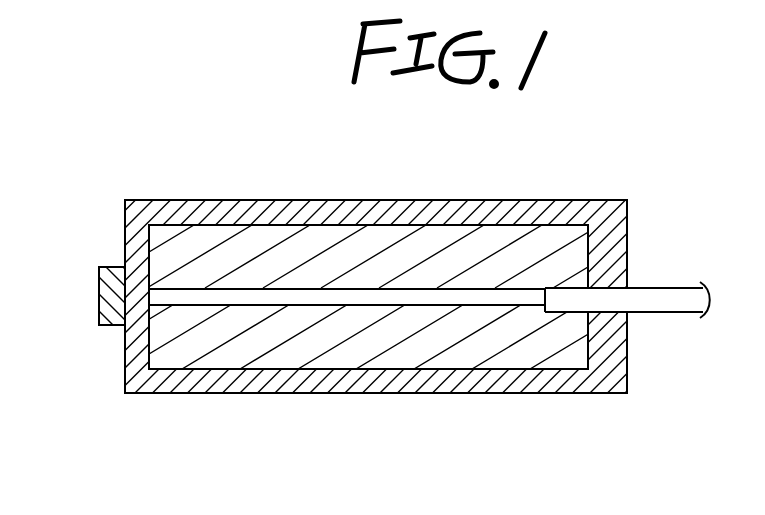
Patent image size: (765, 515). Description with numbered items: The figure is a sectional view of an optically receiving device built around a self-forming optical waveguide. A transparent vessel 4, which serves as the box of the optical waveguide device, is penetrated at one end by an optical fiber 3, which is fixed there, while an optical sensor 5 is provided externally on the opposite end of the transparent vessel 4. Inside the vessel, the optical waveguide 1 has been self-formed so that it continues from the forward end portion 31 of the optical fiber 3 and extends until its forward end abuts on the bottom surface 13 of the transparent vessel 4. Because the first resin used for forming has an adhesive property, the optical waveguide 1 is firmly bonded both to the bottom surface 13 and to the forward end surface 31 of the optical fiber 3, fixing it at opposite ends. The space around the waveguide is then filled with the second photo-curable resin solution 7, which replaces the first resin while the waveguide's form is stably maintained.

The optical waveguide 1 is at (242, 302).
The bottom surface 13 is at (149, 306).
The optical fiber 3 is at (665, 312).
The forward end portion 31 is at (545, 312).
The transparent vessel 4 is at (320, 200).
The optical sensor 5 is at (100, 278).
The second photo-curable resin solution 7 is at (368, 340).